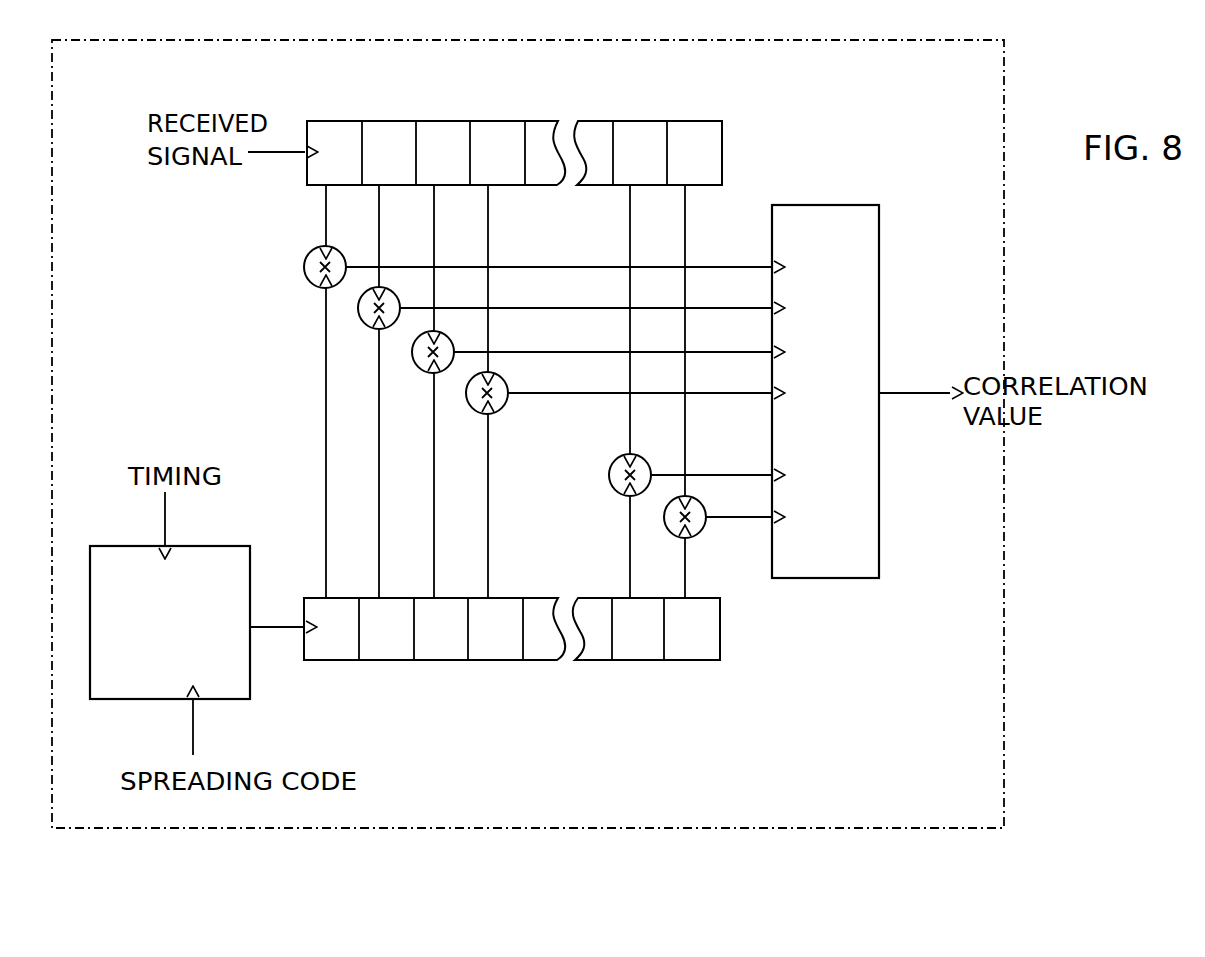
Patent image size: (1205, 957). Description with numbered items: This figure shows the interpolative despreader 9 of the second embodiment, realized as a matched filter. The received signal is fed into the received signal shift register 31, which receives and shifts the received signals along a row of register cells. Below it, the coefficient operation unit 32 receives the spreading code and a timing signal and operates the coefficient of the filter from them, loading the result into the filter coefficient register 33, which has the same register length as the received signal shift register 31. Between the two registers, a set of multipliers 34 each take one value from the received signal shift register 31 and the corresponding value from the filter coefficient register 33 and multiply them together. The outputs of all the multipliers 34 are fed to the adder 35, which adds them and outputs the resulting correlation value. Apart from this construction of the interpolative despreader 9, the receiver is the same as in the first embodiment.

The interpolative despreader 9 is at (890, 828).
The received signal shift register 31 is at (688, 120).
The coefficient operation unit 32 is at (250, 690).
The filter coefficient register 33 is at (720, 620).
The multipliers 34 is at (304, 258).
The adder 35 is at (790, 205).